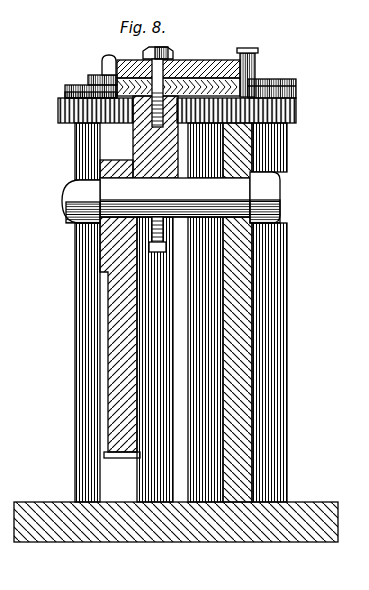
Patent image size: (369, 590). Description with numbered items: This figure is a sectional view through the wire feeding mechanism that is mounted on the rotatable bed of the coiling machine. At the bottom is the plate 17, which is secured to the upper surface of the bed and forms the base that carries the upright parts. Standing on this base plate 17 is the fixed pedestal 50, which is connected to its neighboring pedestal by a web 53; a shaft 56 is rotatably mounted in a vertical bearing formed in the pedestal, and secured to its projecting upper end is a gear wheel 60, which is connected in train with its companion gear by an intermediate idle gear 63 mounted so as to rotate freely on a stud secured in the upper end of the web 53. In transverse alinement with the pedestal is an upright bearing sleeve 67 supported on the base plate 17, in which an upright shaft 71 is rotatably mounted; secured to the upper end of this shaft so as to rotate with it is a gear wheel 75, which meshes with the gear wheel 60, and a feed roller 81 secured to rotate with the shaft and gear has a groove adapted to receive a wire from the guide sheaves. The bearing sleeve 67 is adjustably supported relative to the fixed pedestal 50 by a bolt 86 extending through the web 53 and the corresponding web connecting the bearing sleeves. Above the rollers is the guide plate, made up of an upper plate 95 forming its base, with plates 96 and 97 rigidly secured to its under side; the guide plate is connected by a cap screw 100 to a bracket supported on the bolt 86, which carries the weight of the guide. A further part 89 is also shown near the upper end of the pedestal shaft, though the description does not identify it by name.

The plate 17 is at (110, 523).
The pedestal 50 is at (270, 420).
The web 53 is at (237, 352).
The shaft 56 is at (247, 50).
The gear wheel 60 is at (297, 113).
The intermediate idle gear 63 is at (252, 132).
The bearing sleeve 67 is at (90, 348).
The upright shaft 71 is at (108, 56).
The gear wheel 75 is at (60, 118).
The feed roller 81 is at (70, 88).
The bolt 86 is at (213, 202).
The ring 89 is at (293, 86).
The upper plate 95 is at (192, 53).
The plate 96 is at (93, 76).
The plate 97 is at (84, 95).
The cap screw 100 is at (172, 50).